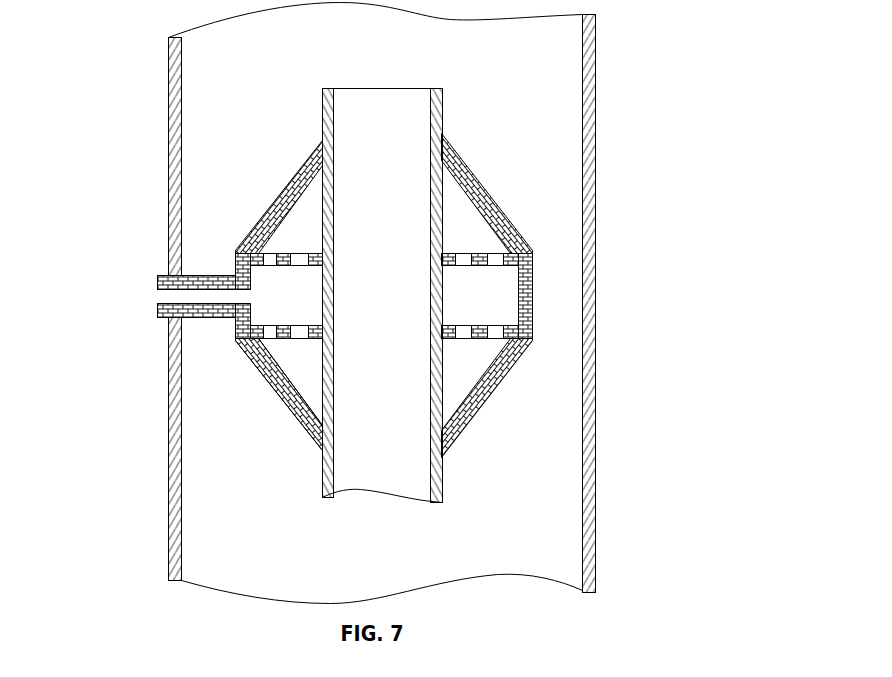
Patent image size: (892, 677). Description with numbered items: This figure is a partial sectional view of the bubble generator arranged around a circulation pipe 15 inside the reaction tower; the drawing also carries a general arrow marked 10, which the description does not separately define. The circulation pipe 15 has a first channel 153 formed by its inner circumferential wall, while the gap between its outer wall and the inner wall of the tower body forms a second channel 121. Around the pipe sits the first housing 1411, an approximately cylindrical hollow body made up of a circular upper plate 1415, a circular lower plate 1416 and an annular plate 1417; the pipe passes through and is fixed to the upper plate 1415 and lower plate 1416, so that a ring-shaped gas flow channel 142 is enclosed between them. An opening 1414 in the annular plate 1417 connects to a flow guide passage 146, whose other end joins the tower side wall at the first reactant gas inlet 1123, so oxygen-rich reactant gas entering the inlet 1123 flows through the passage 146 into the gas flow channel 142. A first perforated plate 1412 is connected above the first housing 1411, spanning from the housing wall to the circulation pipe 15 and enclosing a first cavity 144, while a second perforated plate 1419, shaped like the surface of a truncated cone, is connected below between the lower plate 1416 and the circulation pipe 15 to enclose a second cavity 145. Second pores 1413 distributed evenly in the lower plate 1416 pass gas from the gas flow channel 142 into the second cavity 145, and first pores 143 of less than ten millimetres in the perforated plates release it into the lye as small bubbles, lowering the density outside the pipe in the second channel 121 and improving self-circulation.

The sprue bush assembly 10 is at (361, 309).
The circulation pipe 15 is at (420, 278).
The second channel 121 is at (550, 113).
The gas flow channel 142 is at (492, 278).
The first pores 143 is at (497, 230).
The first cavity 144 is at (448, 212).
The second cavity 145 is at (305, 363).
The flow guide passage 146 is at (168, 297).
The first channel 153 is at (390, 187).
The first reactant gas inlet 1123 is at (146, 286).
The first housing 1411 is at (168, 272).
The first perforated plate 1412 is at (300, 168).
The second pores 1413 is at (222, 267).
The opening 1414 is at (195, 317).
The upper plate 1415 is at (256, 253).
The lower plate 1416 is at (237, 343).
The annular plate 1417 is at (533, 299).
The second perforated plate 1419 is at (307, 427).